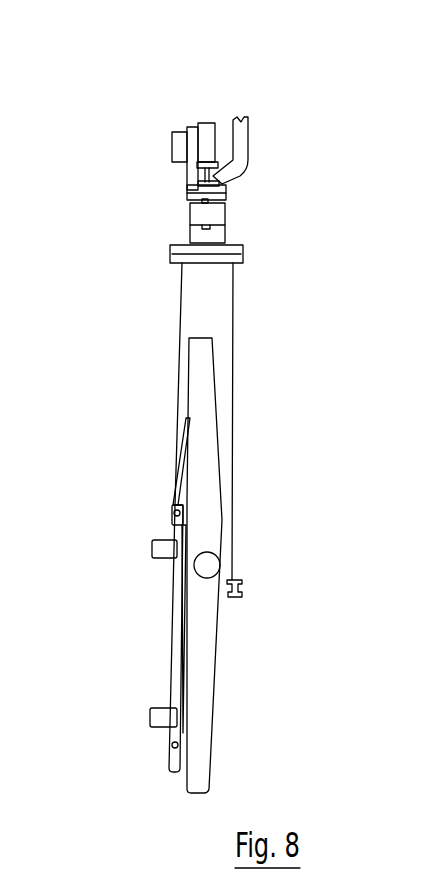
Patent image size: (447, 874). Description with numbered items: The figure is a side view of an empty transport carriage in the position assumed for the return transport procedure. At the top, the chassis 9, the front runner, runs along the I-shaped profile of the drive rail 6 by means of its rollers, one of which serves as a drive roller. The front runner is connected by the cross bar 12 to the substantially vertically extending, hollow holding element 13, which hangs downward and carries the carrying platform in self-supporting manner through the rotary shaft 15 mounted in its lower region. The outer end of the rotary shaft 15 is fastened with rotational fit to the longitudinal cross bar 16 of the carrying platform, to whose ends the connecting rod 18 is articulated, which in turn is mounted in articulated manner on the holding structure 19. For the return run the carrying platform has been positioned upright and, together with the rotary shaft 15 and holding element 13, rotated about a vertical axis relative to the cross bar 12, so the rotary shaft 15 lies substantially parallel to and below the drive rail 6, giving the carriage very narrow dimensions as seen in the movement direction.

The drive rail 6 is at (222, 180).
The chassis (front runner) 9 is at (211, 148).
The cross bar 12 is at (215, 210).
The holding element 13 is at (215, 293).
The rotary shaft 15 is at (209, 558).
The longitudinal cross bar 16 is at (203, 402).
The connecting rod 18 is at (178, 490).
The holding structure 19 is at (172, 643).